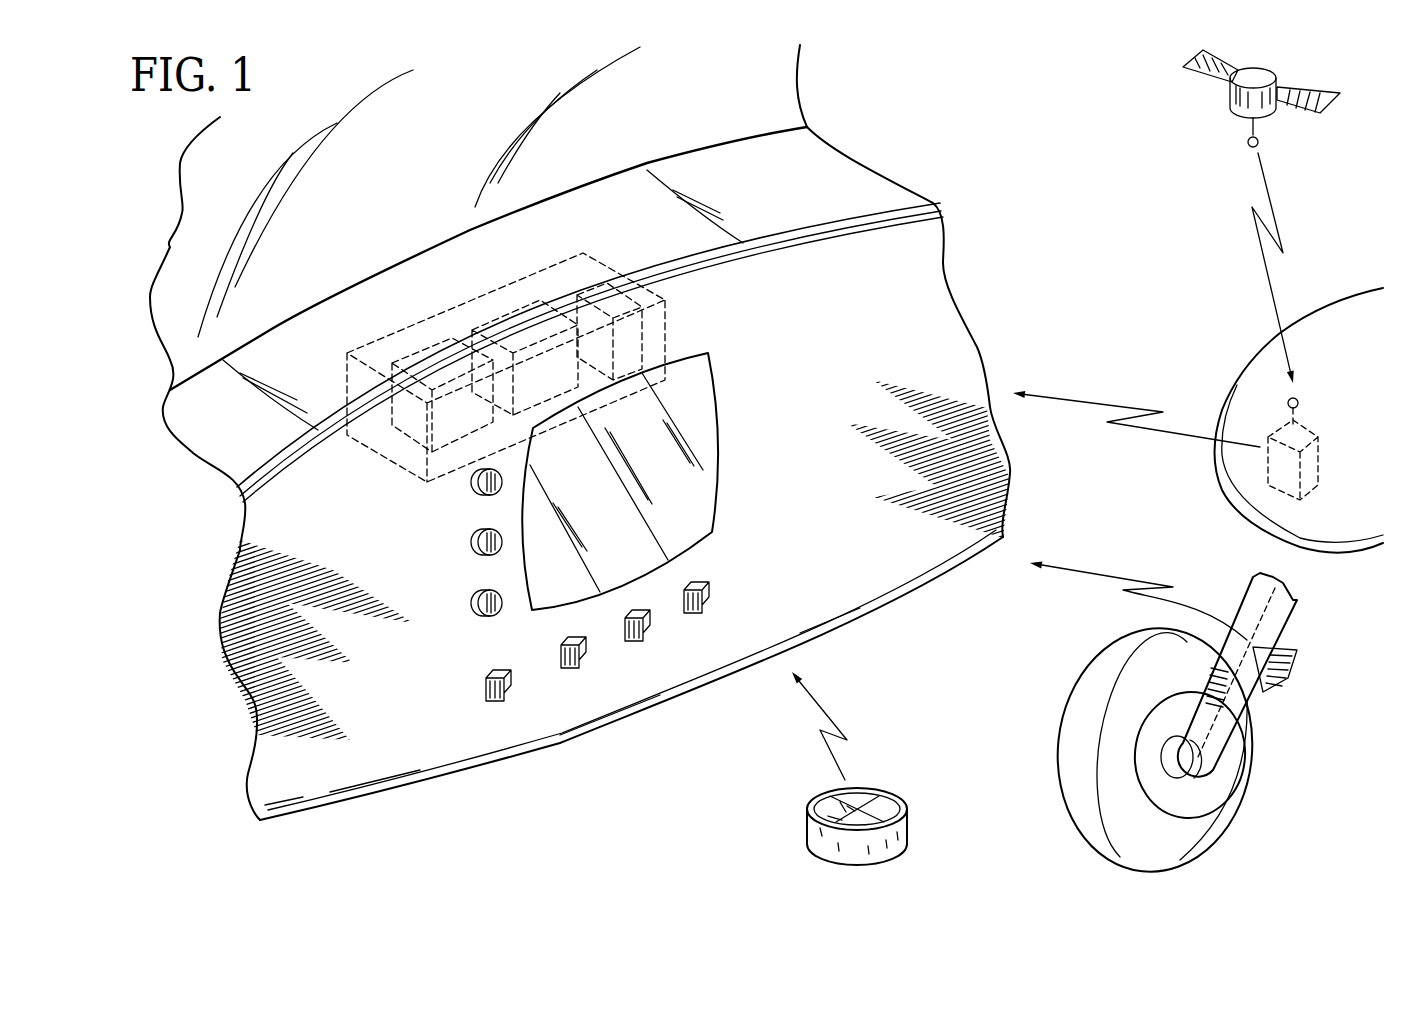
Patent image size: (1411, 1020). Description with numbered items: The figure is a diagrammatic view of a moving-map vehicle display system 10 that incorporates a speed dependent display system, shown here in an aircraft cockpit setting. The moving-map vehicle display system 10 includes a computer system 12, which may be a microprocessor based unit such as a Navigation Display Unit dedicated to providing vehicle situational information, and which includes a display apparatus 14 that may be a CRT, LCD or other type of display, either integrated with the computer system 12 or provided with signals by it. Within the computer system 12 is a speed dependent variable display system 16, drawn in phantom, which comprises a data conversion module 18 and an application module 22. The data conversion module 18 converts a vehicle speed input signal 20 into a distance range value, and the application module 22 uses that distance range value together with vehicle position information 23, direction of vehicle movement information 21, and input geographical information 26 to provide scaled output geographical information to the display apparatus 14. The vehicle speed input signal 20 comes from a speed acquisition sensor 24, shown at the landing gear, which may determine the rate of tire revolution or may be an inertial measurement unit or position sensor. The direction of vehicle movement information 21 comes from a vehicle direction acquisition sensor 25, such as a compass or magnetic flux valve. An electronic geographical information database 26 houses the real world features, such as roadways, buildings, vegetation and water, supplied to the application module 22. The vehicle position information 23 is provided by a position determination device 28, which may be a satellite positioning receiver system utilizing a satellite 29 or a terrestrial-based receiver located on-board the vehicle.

The moving-map vehicle display system 10 is at (205, 690).
The computer system 12 is at (406, 507).
The display apparatus 14 is at (692, 491).
The speed dependent variable display system 16 is at (416, 309).
The data conversion module 18 is at (402, 360).
The vehicle speed input signal 20 is at (1120, 578).
The direction of vehicle movement information 21 is at (833, 717).
The application module 22 is at (497, 317).
The vehicle position information 23 is at (1115, 405).
The speed acquisition sensor 24 is at (1290, 680).
The vehicle direction acquisition sensor 25 is at (807, 847).
The electronic geographical information database 26 is at (592, 290).
The position determination device 28 is at (1310, 465).
The satellite 29 is at (1255, 73).